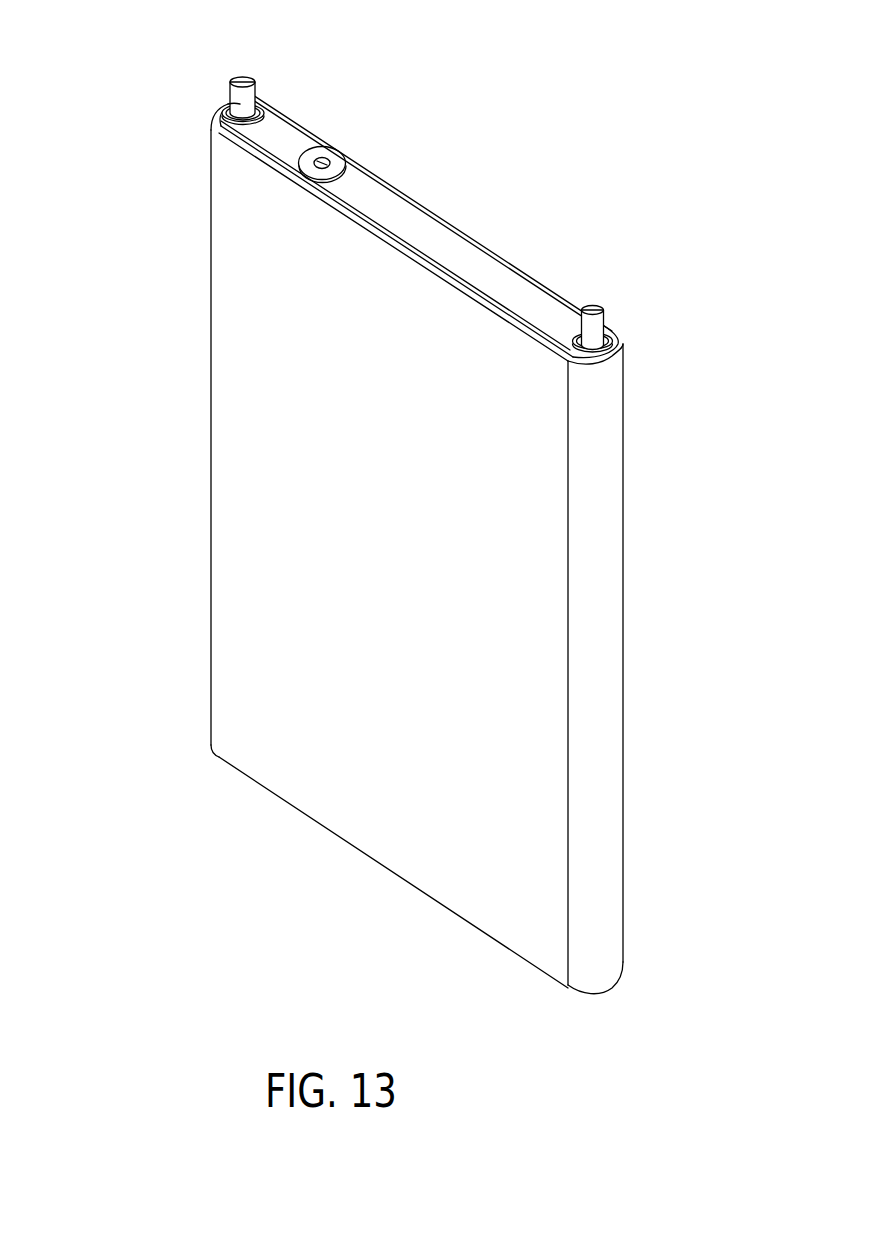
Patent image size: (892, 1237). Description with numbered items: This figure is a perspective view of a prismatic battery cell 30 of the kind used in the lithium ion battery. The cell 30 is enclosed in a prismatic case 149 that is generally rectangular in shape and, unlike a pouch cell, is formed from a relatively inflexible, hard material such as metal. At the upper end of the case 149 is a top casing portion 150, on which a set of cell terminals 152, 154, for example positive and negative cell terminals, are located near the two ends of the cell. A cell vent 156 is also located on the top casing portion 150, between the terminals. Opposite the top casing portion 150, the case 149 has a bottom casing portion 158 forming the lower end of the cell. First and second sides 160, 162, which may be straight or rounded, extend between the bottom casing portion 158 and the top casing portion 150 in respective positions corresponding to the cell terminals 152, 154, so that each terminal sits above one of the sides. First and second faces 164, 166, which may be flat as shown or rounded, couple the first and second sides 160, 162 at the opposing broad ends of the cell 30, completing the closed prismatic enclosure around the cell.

The battery cell 30 is at (139, 767).
The prismatic case 149 is at (695, 430).
The top casing portion 150 is at (517, 205).
The cell terminal 152 is at (238, 100).
The cell terminal 154 is at (594, 328).
The cell vent 156 is at (389, 206).
The bottom casing portion 158 is at (388, 877).
The first side 160 is at (596, 652).
The second side 162 is at (211, 438).
The first face 164 is at (528, 848).
The second face 166 is at (637, 728).